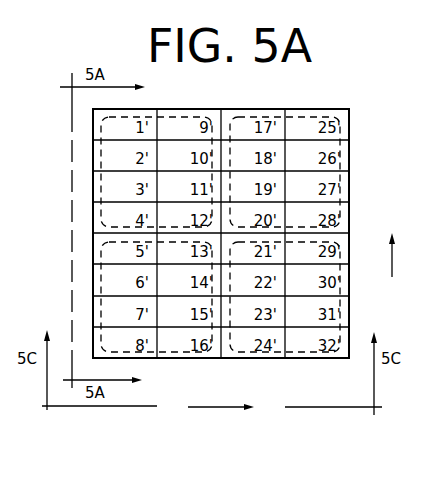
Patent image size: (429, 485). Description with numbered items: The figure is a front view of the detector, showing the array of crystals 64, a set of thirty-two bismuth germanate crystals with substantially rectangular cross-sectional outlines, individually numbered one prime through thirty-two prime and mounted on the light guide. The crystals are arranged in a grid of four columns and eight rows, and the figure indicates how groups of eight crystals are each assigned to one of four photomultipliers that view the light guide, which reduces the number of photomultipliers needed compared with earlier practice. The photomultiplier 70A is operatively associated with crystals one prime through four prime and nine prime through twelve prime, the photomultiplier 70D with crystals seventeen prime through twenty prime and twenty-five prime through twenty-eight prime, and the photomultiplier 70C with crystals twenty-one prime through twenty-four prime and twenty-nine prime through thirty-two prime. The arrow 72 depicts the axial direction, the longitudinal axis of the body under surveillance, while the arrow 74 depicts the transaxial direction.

The array of crystals 64 is at (143, 109).
The photomultiplier 70A is at (101, 157).
The photomultiplier 70C is at (341, 250).
The photomultiplier 70D is at (330, 117).
The arrow 72 is at (207, 407).
The arrow 74 is at (392, 256).